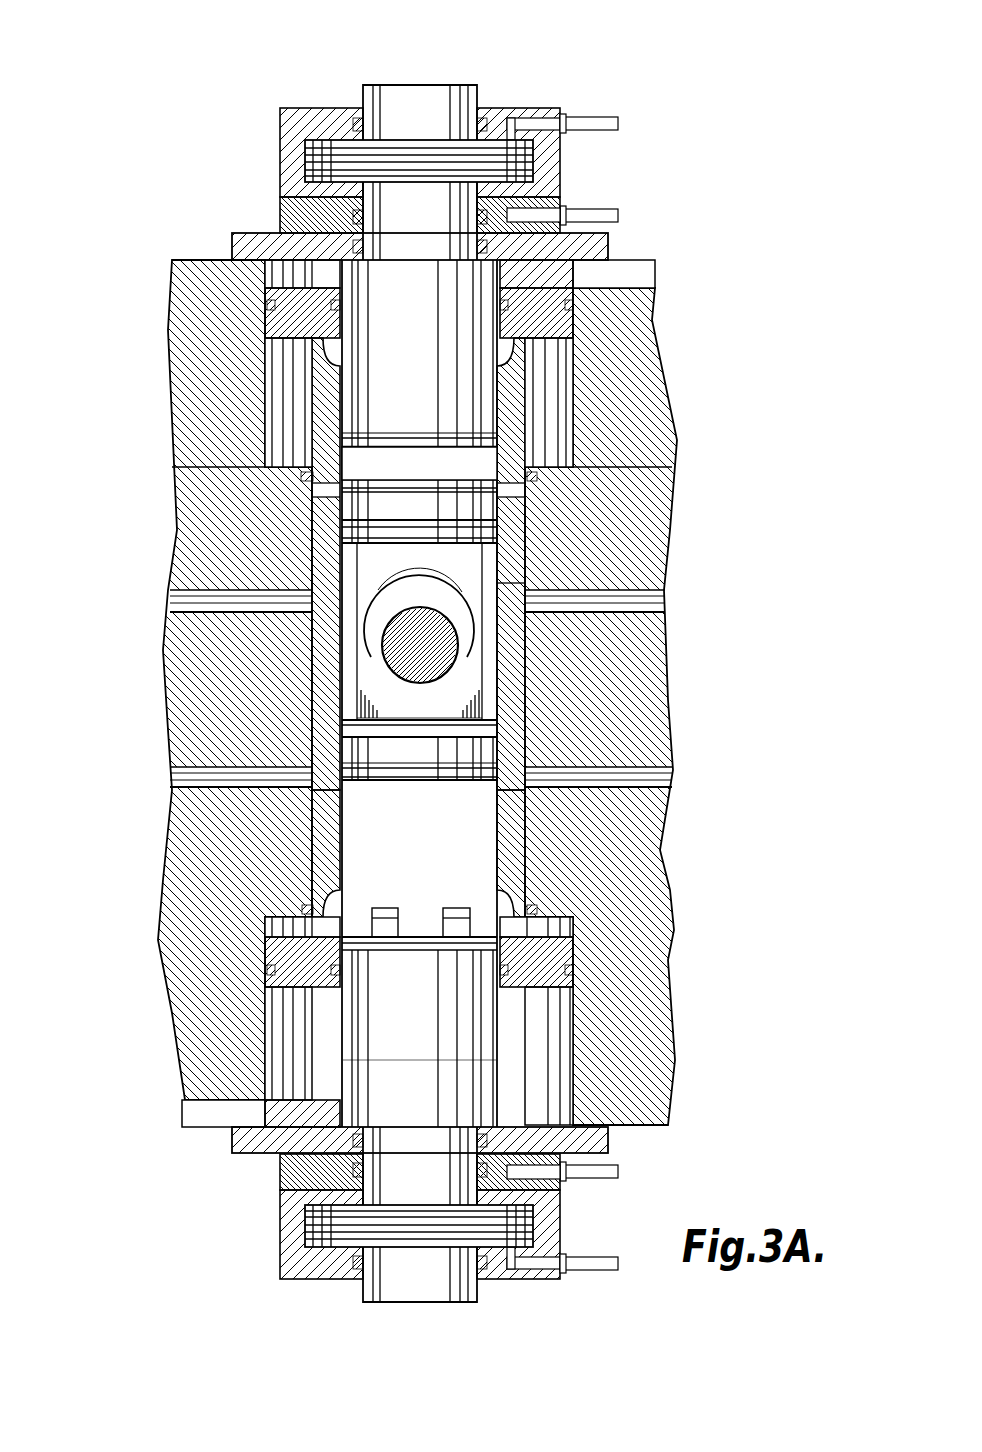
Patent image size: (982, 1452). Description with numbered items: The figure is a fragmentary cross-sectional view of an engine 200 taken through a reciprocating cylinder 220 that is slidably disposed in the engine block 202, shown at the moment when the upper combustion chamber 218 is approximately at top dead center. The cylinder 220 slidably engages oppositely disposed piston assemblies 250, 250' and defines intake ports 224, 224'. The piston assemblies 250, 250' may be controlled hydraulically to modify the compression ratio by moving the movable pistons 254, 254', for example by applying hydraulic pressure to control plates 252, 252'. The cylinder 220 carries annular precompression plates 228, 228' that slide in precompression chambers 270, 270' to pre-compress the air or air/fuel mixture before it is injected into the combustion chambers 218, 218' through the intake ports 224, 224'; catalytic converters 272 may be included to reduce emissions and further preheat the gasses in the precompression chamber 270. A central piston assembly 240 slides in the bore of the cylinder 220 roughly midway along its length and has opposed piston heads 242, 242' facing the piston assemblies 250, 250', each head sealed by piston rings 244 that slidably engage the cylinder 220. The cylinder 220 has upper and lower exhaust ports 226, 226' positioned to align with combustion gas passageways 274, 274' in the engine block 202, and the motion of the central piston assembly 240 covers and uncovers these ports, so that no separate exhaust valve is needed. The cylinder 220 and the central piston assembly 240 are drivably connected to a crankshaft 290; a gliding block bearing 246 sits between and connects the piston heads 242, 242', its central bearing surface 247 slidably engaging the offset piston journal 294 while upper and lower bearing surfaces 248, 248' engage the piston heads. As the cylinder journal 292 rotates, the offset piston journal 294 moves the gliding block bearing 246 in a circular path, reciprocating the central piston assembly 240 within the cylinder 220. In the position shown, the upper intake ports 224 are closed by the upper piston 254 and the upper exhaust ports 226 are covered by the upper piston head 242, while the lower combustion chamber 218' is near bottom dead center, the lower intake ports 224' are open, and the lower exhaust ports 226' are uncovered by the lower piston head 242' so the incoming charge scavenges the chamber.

The engine 200 is at (186, 164).
The engine block 202 is at (620, 300).
The upper combustion chamber 218 is at (518, 627).
The lower combustion chamber 218' is at (534, 853).
The reciprocating cylinder 220 is at (538, 388).
The upper intake ports 224 is at (604, 303).
The lower intake ports 224' is at (419, 927).
The upper exhaust ports 226 is at (417, 463).
The lower exhaust ports 226' is at (426, 821).
The upper annular precompression plate 228 is at (212, 306).
The lower annular precompression plate 228' is at (219, 1020).
The central piston assembly 240 is at (340, 663).
The upper piston head 242 is at (550, 585).
The lower piston head 242' is at (550, 714).
The piston rings 244 is at (340, 527).
The gliding block bearing 246 is at (367, 637).
The central bearing surface 247 is at (373, 655).
The upper bearing surface 248 is at (563, 565).
The lower bearing surface 248' is at (551, 703).
The upper piston assembly 250 is at (449, 134).
The lower piston assembly 250' is at (443, 1221).
The upper control plate 252 is at (465, 161).
The lower control plate 252' is at (478, 1226).
The upper movable piston 254 is at (332, 661).
The lower movable piston 254' is at (547, 1079).
The upper precompression chamber 270 is at (503, 363).
The lower precompression chamber 270' is at (503, 1021).
The catalytic converter 272 is at (563, 258).
The upper combustion gas passageway 274 is at (613, 607).
The lower combustion gas passageway 274' is at (431, 780).
The crankshaft 290 is at (465, 675).
The cylinder journal 292 is at (345, 687).
The offset piston journal 294 is at (600, 607).